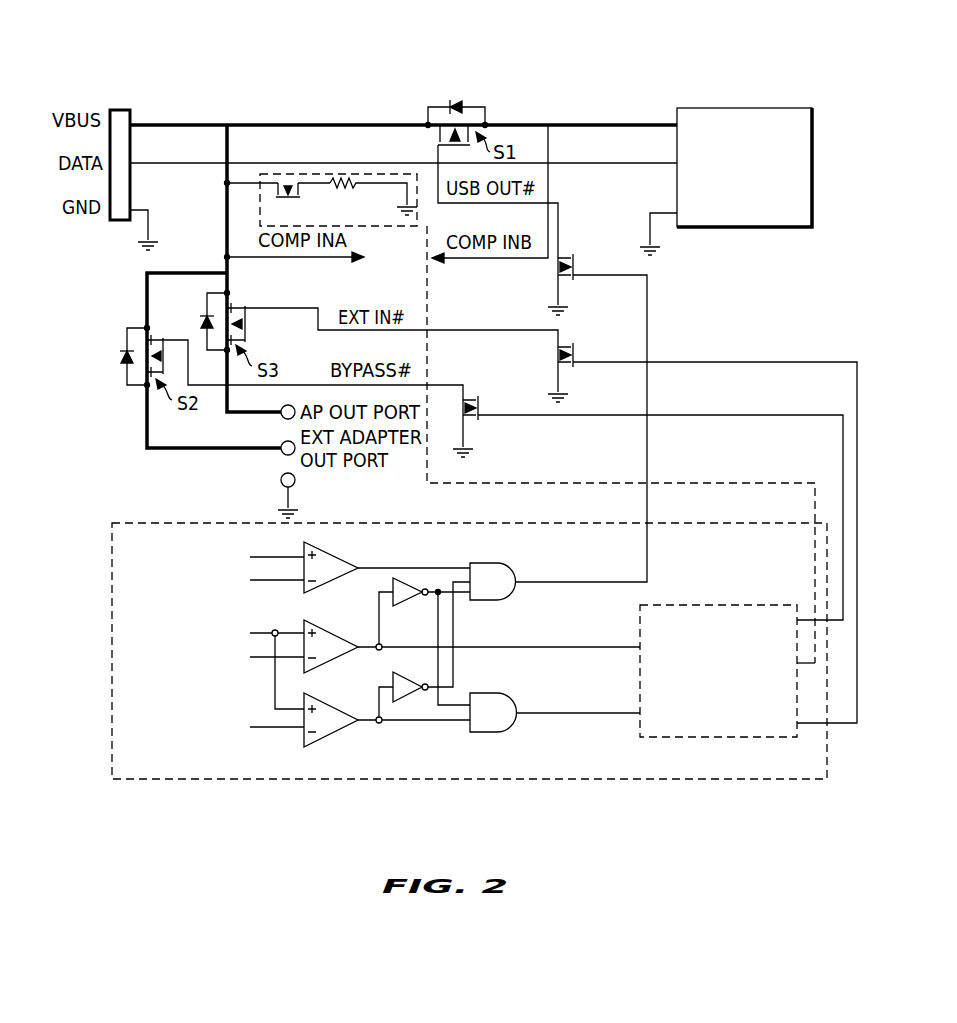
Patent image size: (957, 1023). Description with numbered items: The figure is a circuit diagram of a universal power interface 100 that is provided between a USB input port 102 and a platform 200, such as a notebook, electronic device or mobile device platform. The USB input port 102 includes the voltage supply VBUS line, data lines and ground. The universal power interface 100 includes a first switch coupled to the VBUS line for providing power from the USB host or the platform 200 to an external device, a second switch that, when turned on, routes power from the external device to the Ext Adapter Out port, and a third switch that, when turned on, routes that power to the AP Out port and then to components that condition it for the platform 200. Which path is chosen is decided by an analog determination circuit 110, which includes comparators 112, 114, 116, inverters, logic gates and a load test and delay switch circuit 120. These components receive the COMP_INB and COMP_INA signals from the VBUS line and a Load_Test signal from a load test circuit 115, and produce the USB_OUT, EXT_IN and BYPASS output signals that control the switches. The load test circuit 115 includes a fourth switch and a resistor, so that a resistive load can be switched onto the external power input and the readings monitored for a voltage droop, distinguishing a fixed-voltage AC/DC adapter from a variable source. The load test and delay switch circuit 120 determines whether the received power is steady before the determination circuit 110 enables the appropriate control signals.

The universal power interface 100 is at (188, 67).
The USB input port 102 is at (110, 222).
The determination circuit 110 is at (475, 668).
The comparator 112 is at (318, 590).
The comparator 114 is at (318, 668).
The comparator 116 is at (318, 740).
The load test circuit 115 is at (302, 174).
The load test and delay switch circuit 120 is at (740, 738).
The platform 200 is at (742, 107).